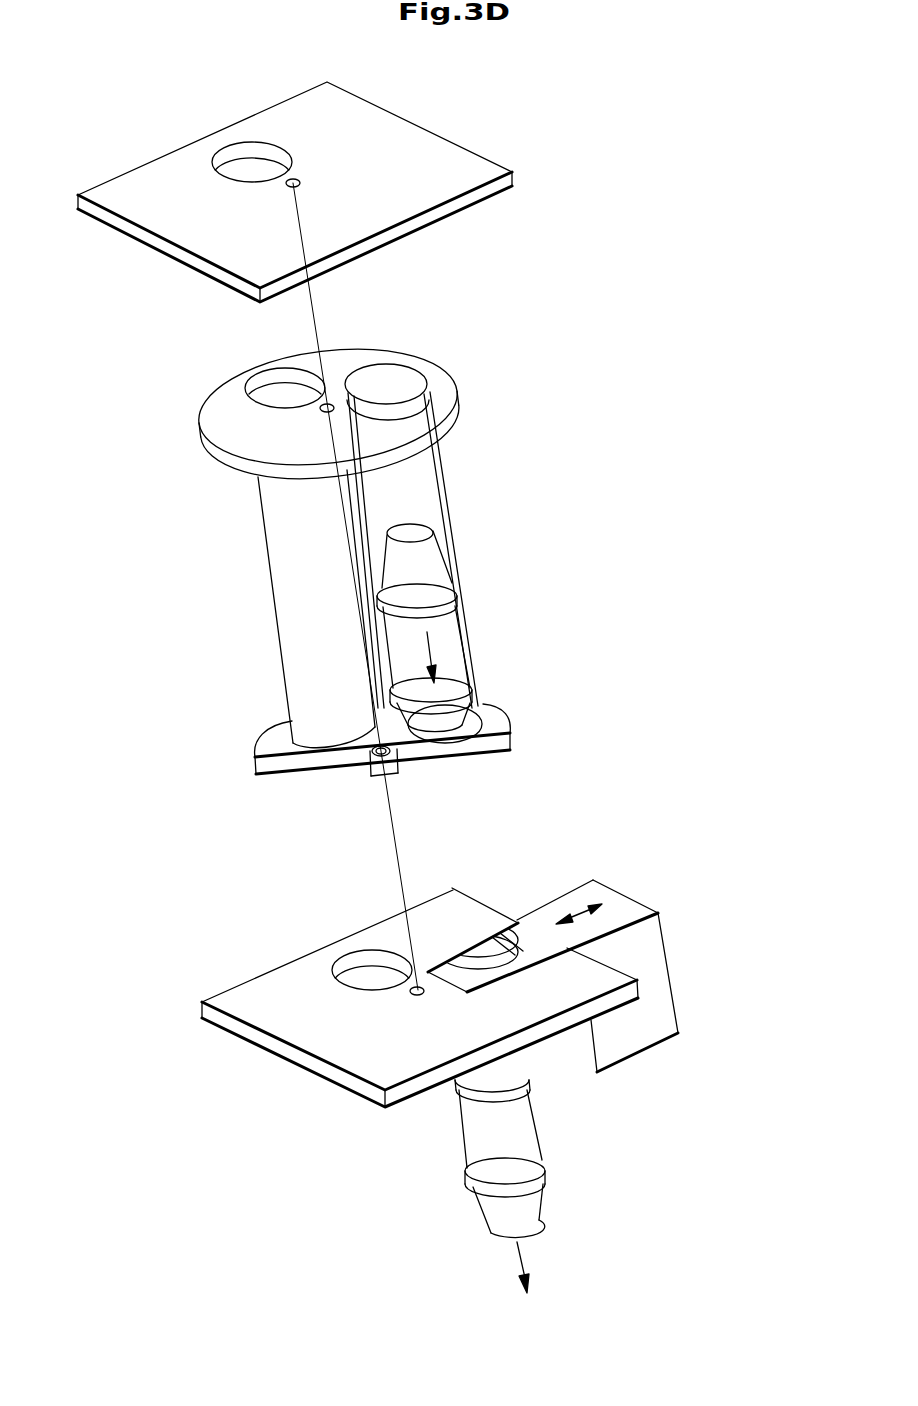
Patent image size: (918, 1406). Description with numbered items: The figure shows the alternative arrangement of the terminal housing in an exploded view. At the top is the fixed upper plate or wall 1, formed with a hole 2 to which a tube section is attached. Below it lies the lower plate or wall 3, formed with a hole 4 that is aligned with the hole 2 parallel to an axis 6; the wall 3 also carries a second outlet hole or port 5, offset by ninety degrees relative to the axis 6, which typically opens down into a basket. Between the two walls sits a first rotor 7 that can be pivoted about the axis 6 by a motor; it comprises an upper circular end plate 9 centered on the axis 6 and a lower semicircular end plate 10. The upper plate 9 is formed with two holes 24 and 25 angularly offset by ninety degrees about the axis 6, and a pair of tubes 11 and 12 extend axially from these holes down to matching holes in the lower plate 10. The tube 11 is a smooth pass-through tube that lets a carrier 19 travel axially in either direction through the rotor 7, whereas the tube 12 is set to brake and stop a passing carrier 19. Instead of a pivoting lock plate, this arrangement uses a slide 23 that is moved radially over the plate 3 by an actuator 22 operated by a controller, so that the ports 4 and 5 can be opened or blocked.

The upper plate or wall 1 is at (382, 178).
The hole 2 is at (268, 163).
The lower plate or wall 3 is at (433, 938).
The hole 4 is at (378, 978).
The second outlet hole or port 5 is at (595, 923).
The axis 6 is at (407, 892).
The first rotor 7 is at (478, 412).
The upper circular end plate 9 is at (258, 447).
The lower semicircular end plate 10 is at (277, 738).
The tube 11 is at (303, 642).
The tube 12 is at (385, 503).
The carrier 19 is at (440, 640).
The motor 22 is at (612, 1045).
The slide 23 is at (533, 922).
The hole 24 is at (268, 390).
The hole 25 is at (383, 390).